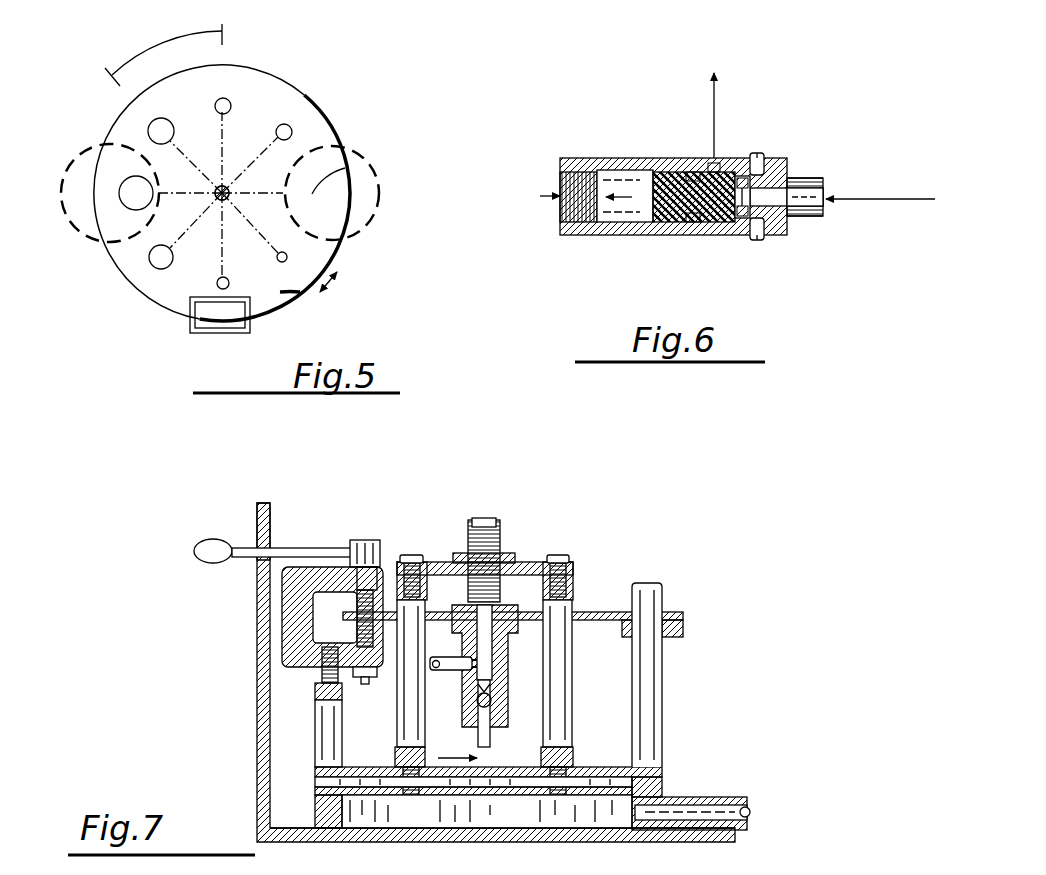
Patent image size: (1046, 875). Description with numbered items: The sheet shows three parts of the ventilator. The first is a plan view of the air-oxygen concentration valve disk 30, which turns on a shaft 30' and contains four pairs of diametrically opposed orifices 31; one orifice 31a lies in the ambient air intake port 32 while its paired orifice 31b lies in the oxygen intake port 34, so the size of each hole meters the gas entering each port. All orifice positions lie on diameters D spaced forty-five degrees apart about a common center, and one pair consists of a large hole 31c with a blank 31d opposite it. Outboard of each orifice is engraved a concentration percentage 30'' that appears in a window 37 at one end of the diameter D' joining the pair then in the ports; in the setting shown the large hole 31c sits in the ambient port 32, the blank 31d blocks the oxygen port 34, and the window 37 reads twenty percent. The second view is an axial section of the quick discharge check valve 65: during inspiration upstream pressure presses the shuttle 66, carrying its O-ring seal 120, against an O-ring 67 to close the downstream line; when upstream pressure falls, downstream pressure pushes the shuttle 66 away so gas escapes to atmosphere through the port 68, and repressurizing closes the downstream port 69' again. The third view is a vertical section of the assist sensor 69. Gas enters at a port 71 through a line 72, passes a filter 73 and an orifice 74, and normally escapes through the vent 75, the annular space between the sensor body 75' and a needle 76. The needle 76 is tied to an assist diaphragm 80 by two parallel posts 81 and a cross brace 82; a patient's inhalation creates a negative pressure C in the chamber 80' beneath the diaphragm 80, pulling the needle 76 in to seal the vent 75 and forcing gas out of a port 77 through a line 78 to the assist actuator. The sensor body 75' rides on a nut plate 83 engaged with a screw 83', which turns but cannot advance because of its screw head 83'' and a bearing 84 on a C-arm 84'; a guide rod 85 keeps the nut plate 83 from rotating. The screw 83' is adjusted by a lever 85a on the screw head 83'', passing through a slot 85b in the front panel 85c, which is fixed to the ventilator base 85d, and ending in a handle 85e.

In FIG. 5, the disk 30 is at (222, 171).
In FIG. 5, the shaft 30' is at (287, 121).
In FIG. 5, the concentration percentage 30'' is at (316, 315).
In FIG. 5, the orifices 31 is at (229, 101).
In FIG. 5, the orifice 31a is at (288, 127).
In FIG. 5, the paired orifice 31b is at (155, 259).
In FIG. 5, the large hole 31c is at (128, 208).
In FIG. 5, the blank 31d is at (345, 168).
In FIG. 5, the ambient air intake port 32 is at (90, 144).
In FIG. 5, the oxygen intake port 34 is at (360, 147).
In FIG. 5, the window 37 is at (190, 331).
In FIG. 5, the diameters D is at (130, 127).
In FIG. 5, the diameter D' is at (201, 293).
In FIG. 6, the quick discharge check valve 65 is at (779, 113).
In FIG. 6, the shuttle 66 is at (650, 222).
In FIG. 6, the O-ring 67 is at (740, 216).
In FIG. 6, the port 68 is at (713, 160).
In FIG. 6, the downstream port 69' is at (826, 178).
In FIG. 6, the O-ring seal 120 is at (692, 222).
In FIG. 7, the assist sensor 69 is at (588, 676).
In FIG. 7, the port 71 is at (505, 711).
In FIG. 7, the line 72 is at (488, 747).
In FIG. 7, the filter 73 is at (478, 698).
In FIG. 7, the orifice 74 is at (481, 692).
In FIG. 7, the vent 75 is at (511, 625).
In FIG. 7, the sensor body 75' is at (509, 642).
In FIG. 7, the needle 76 is at (478, 517).
In FIG. 7, the port 77 is at (475, 660).
In FIG. 7, the line 78 is at (447, 671).
In FIG. 7, the assist diaphragm 80 is at (488, 820).
In FIG. 7, the chamber 80' is at (473, 845).
In FIG. 7, the posts 81 is at (562, 708).
In FIG. 7, the cross brace 82 is at (520, 562).
In FIG. 7, the nut plate 83 is at (513, 585).
In FIG. 7, the screw 83' is at (277, 637).
In FIG. 7, the screw head 83'' is at (367, 543).
In FIG. 7, the bearing 84 is at (345, 707).
In FIG. 7, the C-arm 84' is at (280, 617).
In FIG. 7, the guide rod 85 is at (648, 707).
In FIG. 7, the lever 85a is at (272, 548).
In FIG. 7, the slot 85b is at (258, 531).
In FIG. 7, the front panel 85c is at (257, 709).
In FIG. 7, the ventilator base 85d is at (393, 833).
In FIG. 7, the handle 85e is at (194, 551).
In FIG. 7, the negative pressure C is at (753, 812).